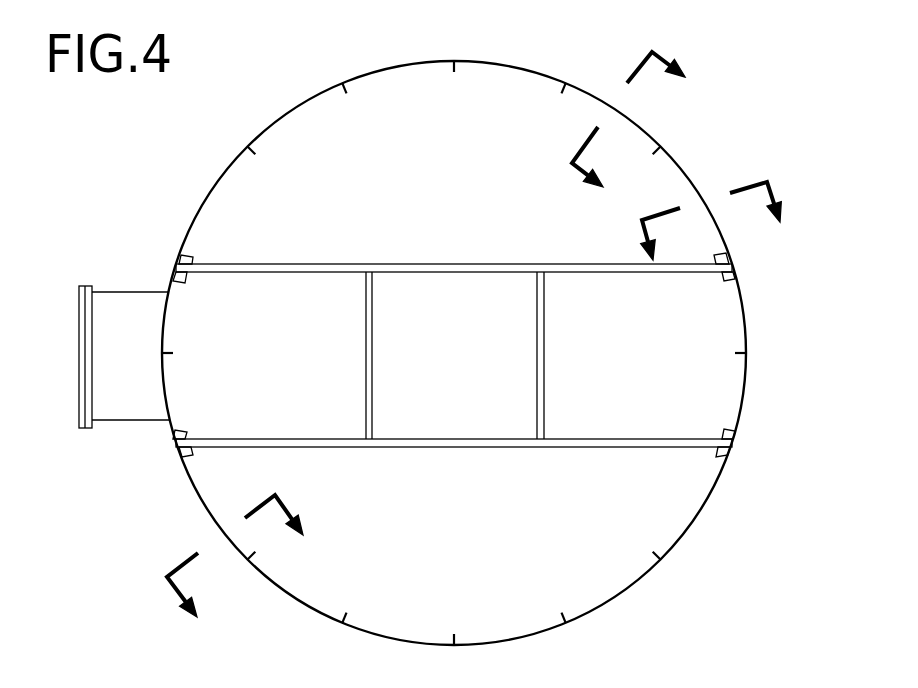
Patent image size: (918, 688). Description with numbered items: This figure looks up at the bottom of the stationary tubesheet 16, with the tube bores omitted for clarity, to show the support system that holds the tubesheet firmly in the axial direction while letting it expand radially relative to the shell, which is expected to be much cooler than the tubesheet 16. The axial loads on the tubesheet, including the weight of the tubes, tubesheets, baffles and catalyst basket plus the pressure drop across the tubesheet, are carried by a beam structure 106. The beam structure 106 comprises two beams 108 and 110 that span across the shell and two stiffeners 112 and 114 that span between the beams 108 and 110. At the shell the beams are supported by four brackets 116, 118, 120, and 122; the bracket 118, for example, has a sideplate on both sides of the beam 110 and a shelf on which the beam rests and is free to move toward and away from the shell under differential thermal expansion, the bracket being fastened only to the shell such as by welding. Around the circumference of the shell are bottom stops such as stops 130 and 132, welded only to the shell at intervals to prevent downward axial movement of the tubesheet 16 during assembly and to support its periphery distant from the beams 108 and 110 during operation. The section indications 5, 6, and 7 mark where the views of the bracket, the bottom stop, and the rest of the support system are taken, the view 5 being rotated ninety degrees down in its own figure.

The stationary tubesheet 16 is at (578, 579).
The beam structure 106 is at (524, 462).
The beam 108 is at (667, 448).
The beam 110 is at (255, 265).
The stiffener 112 is at (537, 330).
The stiffener 114 is at (373, 332).
The bracket 116 is at (727, 448).
The bracket 118 is at (732, 273).
The bracket 120 is at (180, 262).
The bracket 122 is at (180, 453).
The bottom stop 130 is at (657, 148).
The bottom stop 132 is at (251, 557).
The view 5— 5 is at (710, 222).
The view 6— 6 is at (638, 133).
The view 7— 7 is at (246, 566).